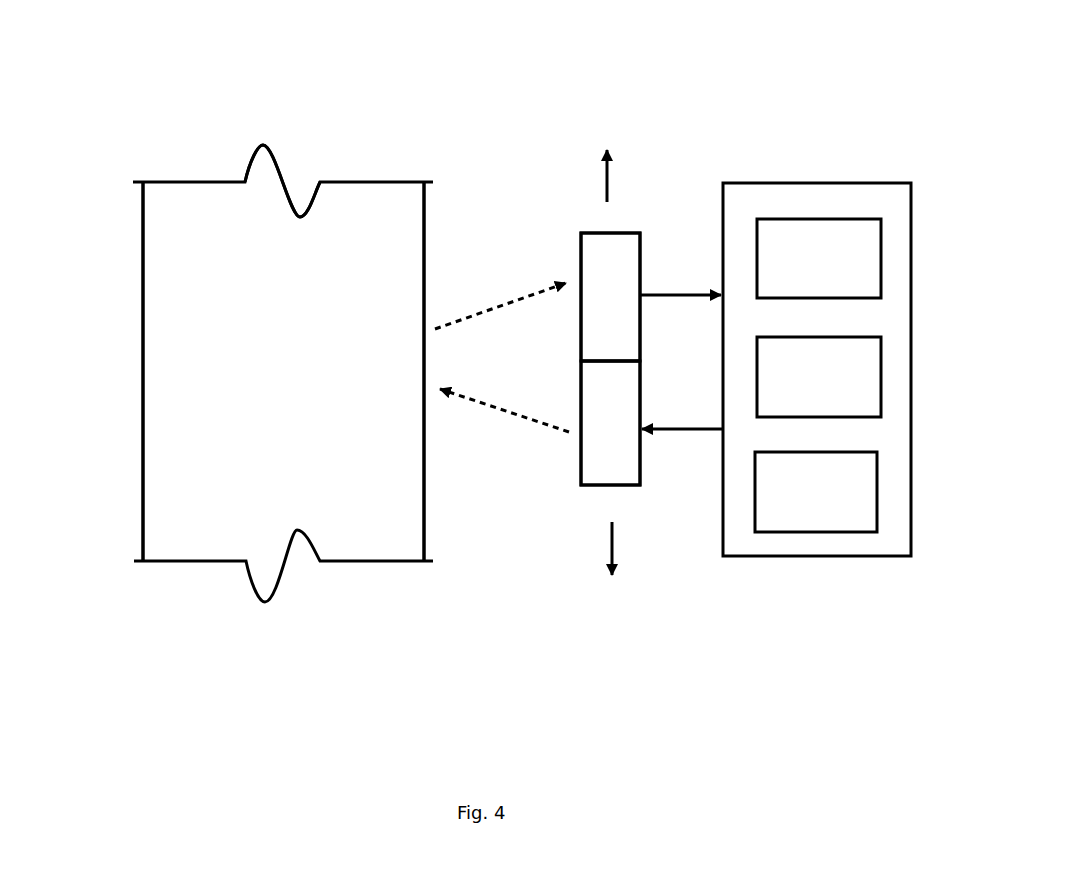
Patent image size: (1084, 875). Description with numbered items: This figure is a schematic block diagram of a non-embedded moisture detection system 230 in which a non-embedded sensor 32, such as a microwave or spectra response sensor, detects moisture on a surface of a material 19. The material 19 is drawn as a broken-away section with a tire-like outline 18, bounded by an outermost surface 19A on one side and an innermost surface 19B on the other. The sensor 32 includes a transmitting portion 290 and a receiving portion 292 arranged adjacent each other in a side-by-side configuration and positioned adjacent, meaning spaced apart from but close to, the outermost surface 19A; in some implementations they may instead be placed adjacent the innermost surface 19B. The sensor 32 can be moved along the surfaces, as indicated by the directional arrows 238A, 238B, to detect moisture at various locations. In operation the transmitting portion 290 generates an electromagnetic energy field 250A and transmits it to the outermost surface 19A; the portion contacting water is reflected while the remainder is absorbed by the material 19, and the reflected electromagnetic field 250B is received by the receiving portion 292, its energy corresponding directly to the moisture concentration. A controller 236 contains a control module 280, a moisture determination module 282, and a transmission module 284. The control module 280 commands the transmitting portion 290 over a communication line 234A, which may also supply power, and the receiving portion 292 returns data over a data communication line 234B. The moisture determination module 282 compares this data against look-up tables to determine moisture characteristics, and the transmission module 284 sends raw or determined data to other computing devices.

The tire 18 is at (165, 202).
The material 19 is at (283, 373).
The outermost surface 19A is at (425, 217).
The innermost surface 19B is at (142, 212).
The non-embedded sensor 32 is at (608, 228).
The non-embedded moisture detection system 230 is at (708, 86).
The communication line 234A is at (678, 430).
The data communication line 234B is at (664, 297).
The controller 236 is at (817, 369).
The directional arrow 238A is at (612, 542).
The directional arrow 238B is at (607, 172).
The electromagnetic energy field 250A is at (497, 407).
The reflected electromagnetic field 250B is at (504, 304).
The control module 280 is at (819, 258).
The moisture determination module 282 is at (819, 377).
The transmission module 284 is at (816, 492).
The transmitting portion 290 is at (581, 458).
The receiving portion 292 is at (581, 247).